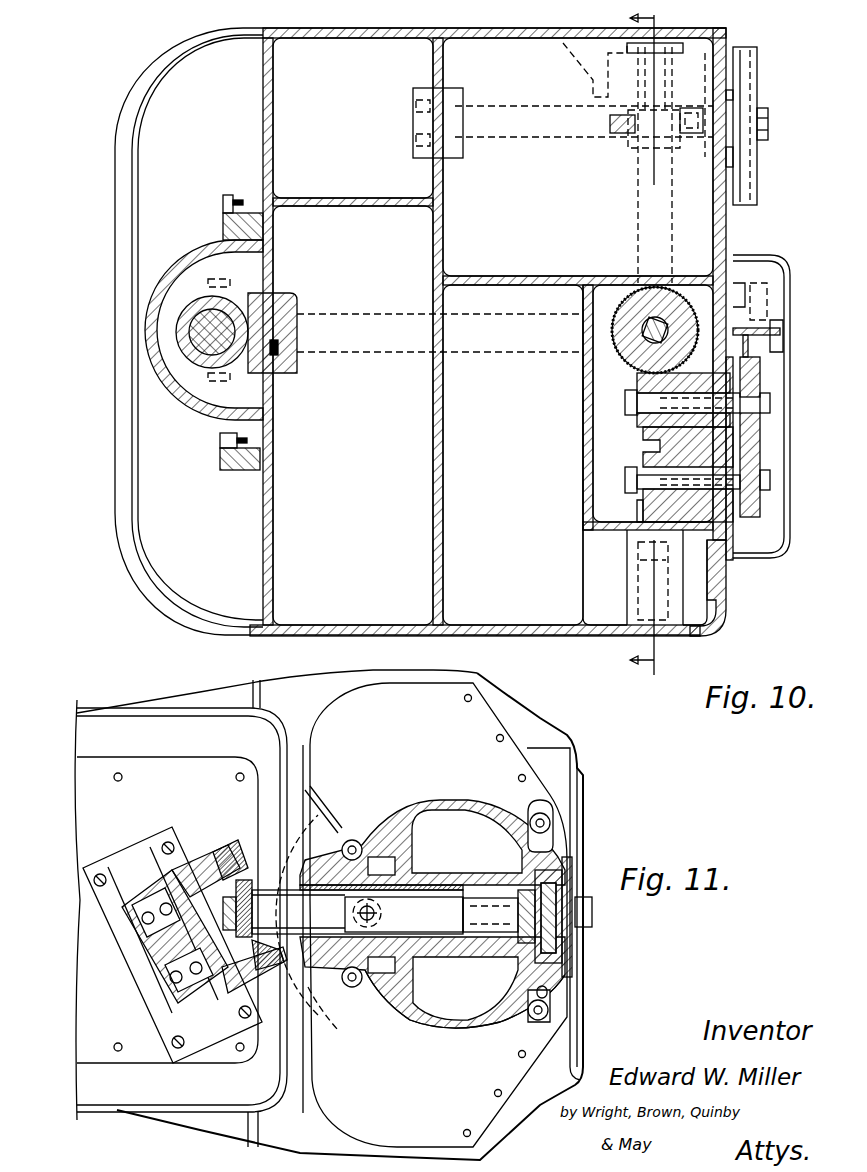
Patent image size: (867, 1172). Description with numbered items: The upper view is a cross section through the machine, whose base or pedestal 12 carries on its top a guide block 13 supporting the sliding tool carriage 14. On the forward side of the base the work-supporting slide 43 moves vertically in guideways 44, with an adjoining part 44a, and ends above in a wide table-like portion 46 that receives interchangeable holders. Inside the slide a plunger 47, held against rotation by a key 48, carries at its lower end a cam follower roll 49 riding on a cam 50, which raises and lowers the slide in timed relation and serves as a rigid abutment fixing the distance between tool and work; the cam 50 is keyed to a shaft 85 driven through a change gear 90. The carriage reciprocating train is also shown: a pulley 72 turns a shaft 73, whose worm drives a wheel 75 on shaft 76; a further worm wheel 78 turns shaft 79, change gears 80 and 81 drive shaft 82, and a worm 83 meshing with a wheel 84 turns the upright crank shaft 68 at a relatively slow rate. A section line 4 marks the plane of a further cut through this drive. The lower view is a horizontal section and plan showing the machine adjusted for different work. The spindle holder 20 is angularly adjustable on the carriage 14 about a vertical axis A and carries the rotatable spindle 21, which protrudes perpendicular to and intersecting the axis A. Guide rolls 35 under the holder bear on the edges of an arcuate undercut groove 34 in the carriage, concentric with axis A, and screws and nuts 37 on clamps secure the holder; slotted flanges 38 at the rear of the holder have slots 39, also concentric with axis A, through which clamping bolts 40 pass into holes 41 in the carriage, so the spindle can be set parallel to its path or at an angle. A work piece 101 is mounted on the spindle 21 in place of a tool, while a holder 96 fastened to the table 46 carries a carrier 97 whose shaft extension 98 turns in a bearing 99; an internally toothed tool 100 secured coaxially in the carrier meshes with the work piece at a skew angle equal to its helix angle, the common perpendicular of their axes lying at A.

In FIG. 10, the section line 4- 4 is at (625, 341).
In FIG. 10, the base or pedestal 12 is at (137, 503).
In FIG. 11, the guide block 13 is at (580, 815).
In FIG. 11, the sliding carriage 14 is at (397, 693).
In FIG. 11, the holder 20 is at (432, 800).
In FIG. 11, the spindle 21 is at (447, 931).
In FIG. 11, the undercut groove 34 is at (330, 802).
In FIG. 11, the guide rolls 35 is at (382, 913).
In FIG. 11, the screws and nuts 37 is at (362, 840).
In FIG. 11, the slotted flanges 38 is at (495, 1027).
In FIG. 11, the slots 39 is at (548, 990).
In FIG. 11, the clamping bolts 40 is at (560, 1010).
In FIG. 11, the holes 41 is at (500, 735).
In FIG. 10, the slide 43 is at (197, 257).
In FIG. 10, the guideways 44 is at (223, 220).
In FIG. 10, the bearing cover 44a is at (272, 300).
In FIG. 11, the table-like portion 46 is at (83, 777).
In FIG. 10, the plunger 47 is at (203, 370).
In FIG. 10, the key 48 is at (247, 368).
In FIG. 10, the cam follower roll 49 is at (300, 327).
In FIG. 10, the cam 50 is at (208, 284).
In FIG. 10, the upright shaft 68 is at (670, 300).
In FIG. 10, the pulley 72 is at (750, 84).
In FIG. 10, the shaft 73 is at (527, 113).
In FIG. 10, the worm wheel 75 is at (613, 132).
In FIG. 10, the shaft 76 is at (636, 211).
In FIG. 10, the worm wheel 78 is at (637, 512).
In FIG. 10, the shaft 79 is at (635, 482).
In FIG. 10, the change gear 80 is at (760, 462).
In FIG. 10, the change gear 81 is at (760, 375).
In FIG. 10, the shaft 82 is at (640, 430).
In FIG. 10, the worm 83 is at (633, 381).
In FIG. 10, the worm wheel 84 is at (617, 355).
In FIG. 10, the shaft 85 is at (493, 345).
In FIG. 10, the change gear 90 is at (770, 300).
In FIG. 11, the holder 96 is at (130, 848).
In FIG. 11, the carrier 97 is at (197, 853).
In FIG. 11, the shaft extension 98 is at (175, 980).
In FIG. 11, the bearing 99 is at (143, 913).
In FIG. 11, the internally toothed tool 100 is at (234, 850).
In FIG. 11, the work piece 101 is at (233, 908).
In FIG. 11, the vertical axis A is at (257, 910).